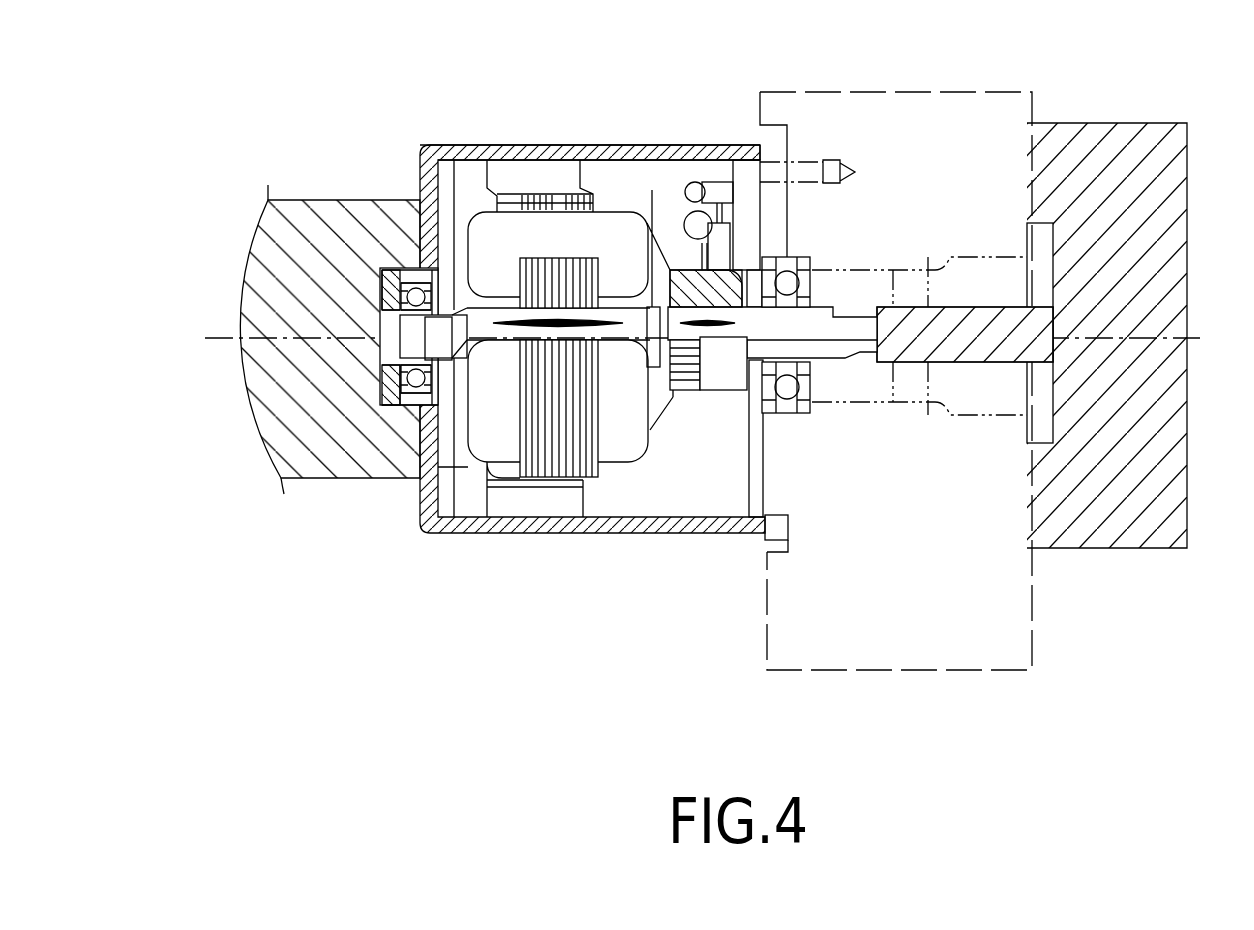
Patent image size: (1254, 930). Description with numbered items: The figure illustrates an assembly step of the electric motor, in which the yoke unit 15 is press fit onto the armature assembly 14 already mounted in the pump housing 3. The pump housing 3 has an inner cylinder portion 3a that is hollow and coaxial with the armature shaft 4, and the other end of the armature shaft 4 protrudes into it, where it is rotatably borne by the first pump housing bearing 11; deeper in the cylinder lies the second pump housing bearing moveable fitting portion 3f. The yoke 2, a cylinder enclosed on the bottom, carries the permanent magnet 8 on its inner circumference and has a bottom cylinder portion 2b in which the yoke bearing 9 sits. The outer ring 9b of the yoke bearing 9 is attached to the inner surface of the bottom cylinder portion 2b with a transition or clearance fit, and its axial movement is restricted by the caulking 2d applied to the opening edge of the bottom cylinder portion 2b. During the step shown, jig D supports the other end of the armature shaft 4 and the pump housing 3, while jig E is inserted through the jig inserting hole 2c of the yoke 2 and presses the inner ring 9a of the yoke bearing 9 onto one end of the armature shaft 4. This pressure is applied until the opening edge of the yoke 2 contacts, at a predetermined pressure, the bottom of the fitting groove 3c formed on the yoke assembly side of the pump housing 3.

The jig E is at (332, 210).
The jig D is at (1098, 140).
The yoke 2 is at (678, 153).
The bottom cylinder portion 2b is at (413, 398).
The jig inserting hole 2c is at (383, 363).
The caulking 2d is at (447, 317).
The pump housing 3 is at (942, 157).
The inner cylinder portion 3a is at (856, 394).
The fitting groove 3c is at (786, 538).
The second pump housing bearing moveable fitting portion 3f is at (833, 380).
The armature shaft 4 is at (745, 330).
The permanent magnet 8 is at (524, 498).
The yoke bearing 9 is at (388, 282).
The inner ring 9a is at (392, 312).
The outer ring 9b is at (400, 285).
The first pump housing bearing 11 is at (820, 250).
The armature assembly 14 is at (618, 473).
The yoke unit 15 is at (598, 142).